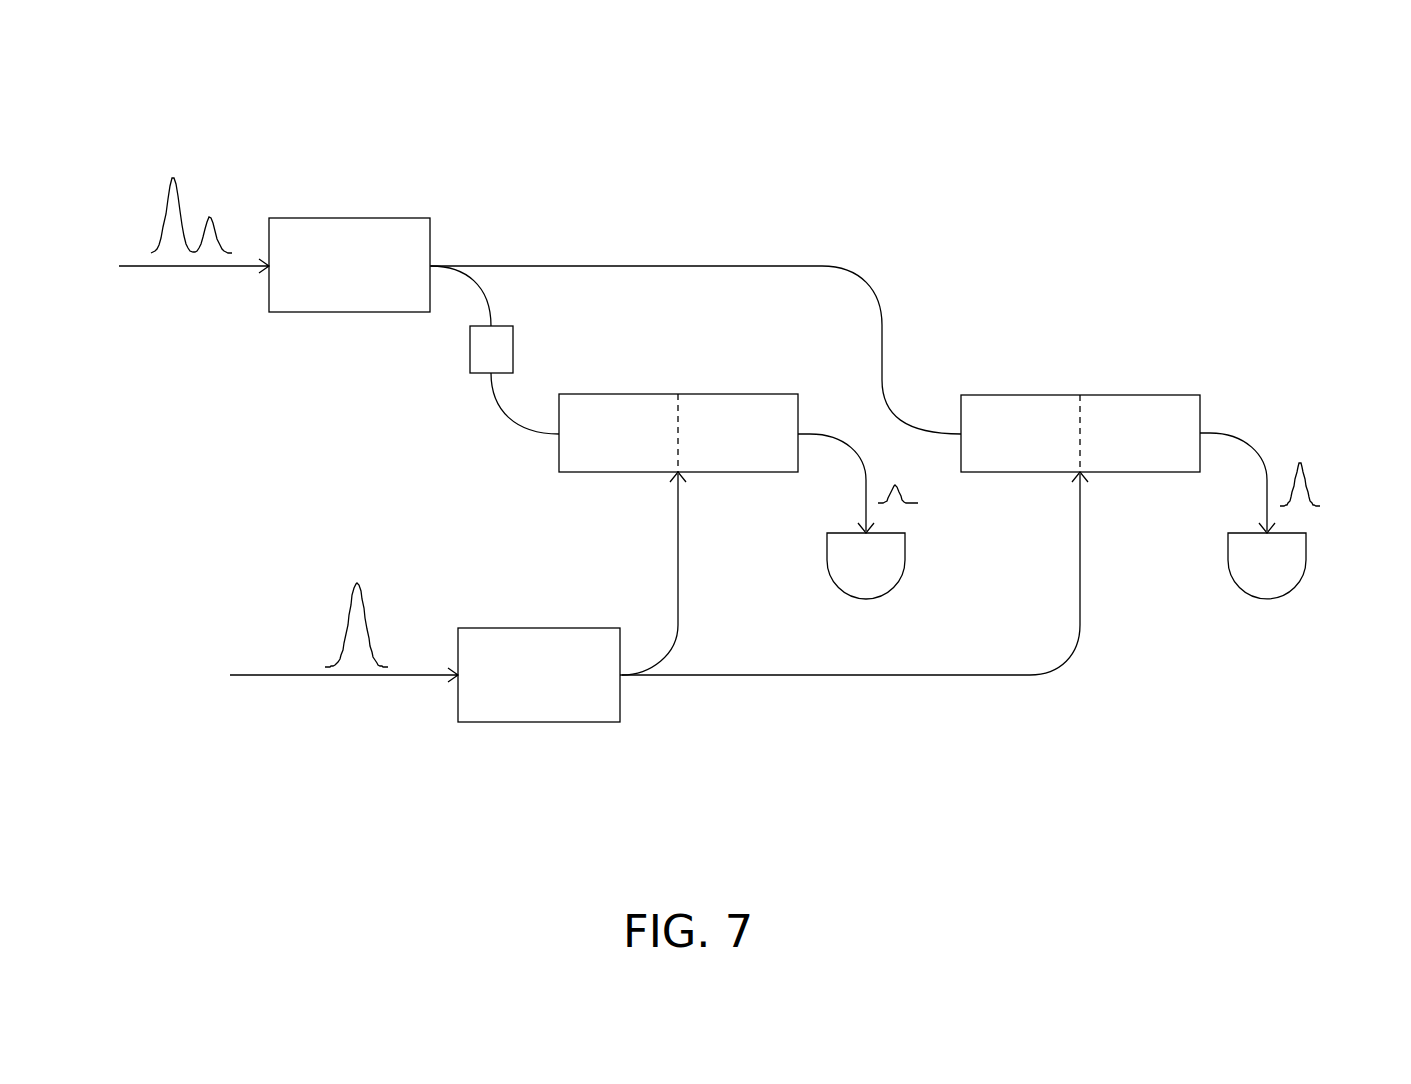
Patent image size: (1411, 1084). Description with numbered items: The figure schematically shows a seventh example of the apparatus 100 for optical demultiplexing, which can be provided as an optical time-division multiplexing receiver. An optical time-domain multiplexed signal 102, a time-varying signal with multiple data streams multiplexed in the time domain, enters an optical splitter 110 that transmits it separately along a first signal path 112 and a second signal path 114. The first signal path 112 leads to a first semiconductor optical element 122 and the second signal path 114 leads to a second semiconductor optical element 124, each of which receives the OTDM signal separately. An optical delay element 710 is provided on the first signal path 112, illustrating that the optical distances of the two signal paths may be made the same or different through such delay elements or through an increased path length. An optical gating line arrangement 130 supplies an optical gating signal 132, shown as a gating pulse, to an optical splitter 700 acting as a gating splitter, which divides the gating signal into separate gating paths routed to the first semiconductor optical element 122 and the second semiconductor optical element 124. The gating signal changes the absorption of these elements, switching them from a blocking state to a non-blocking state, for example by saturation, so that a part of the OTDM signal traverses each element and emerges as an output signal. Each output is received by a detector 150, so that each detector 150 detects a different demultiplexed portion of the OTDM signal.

The apparatus 100 is at (1245, 98).
The optical time-domain multiplexed (OTDM) signal 102 is at (140, 208).
The optical splitter 110 is at (352, 210).
The first signal path 112 is at (496, 428).
The second signal path 114 is at (818, 254).
The first semiconductor optical element 122 is at (711, 496).
The second semiconductor optical element 124 is at (1023, 385).
The optical gating line arrangement 130 is at (279, 695).
The optical gating signal 132 is at (314, 623).
The detector 150 is at (924, 562).
The optical splitter (gating splitter) 700 is at (513, 608).
The optical delay element 710 is at (530, 355).